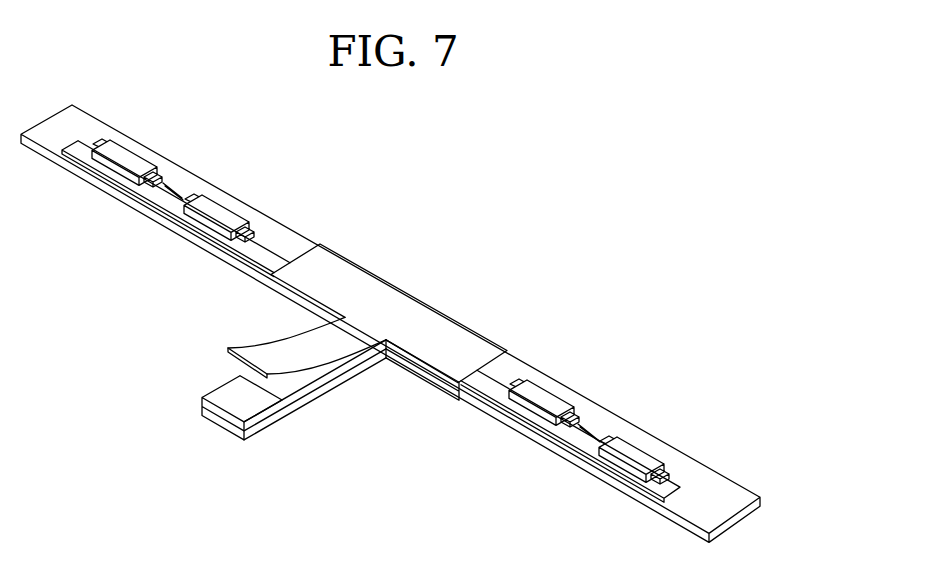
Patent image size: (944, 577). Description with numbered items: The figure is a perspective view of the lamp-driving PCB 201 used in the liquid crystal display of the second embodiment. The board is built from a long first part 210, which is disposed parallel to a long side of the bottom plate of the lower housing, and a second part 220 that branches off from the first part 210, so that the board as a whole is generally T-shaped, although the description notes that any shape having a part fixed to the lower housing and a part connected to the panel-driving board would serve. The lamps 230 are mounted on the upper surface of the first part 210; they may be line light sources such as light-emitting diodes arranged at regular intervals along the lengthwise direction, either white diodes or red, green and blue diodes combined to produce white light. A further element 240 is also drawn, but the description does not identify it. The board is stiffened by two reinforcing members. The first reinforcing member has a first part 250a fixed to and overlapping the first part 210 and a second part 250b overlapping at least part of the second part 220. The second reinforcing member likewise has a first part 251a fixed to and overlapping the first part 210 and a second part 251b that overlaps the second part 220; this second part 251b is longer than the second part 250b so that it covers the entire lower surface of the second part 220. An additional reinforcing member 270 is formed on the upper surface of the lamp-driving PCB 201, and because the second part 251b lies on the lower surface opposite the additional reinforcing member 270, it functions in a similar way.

The lamp-driving PCB 201 is at (605, 345).
The first part 210 is at (717, 485).
The second part 220 is at (356, 401).
The lamps 230 is at (227, 215).
The electrode pad 240 is at (172, 190).
The first part of the first reinforcing member 250a is at (400, 302).
The second part of the first reinforcing member 250b is at (293, 338).
The first part of the second reinforcing member 251a is at (433, 388).
The second part of the second reinforcing member 251b is at (275, 423).
The additional reinforcing member 270 is at (230, 388).